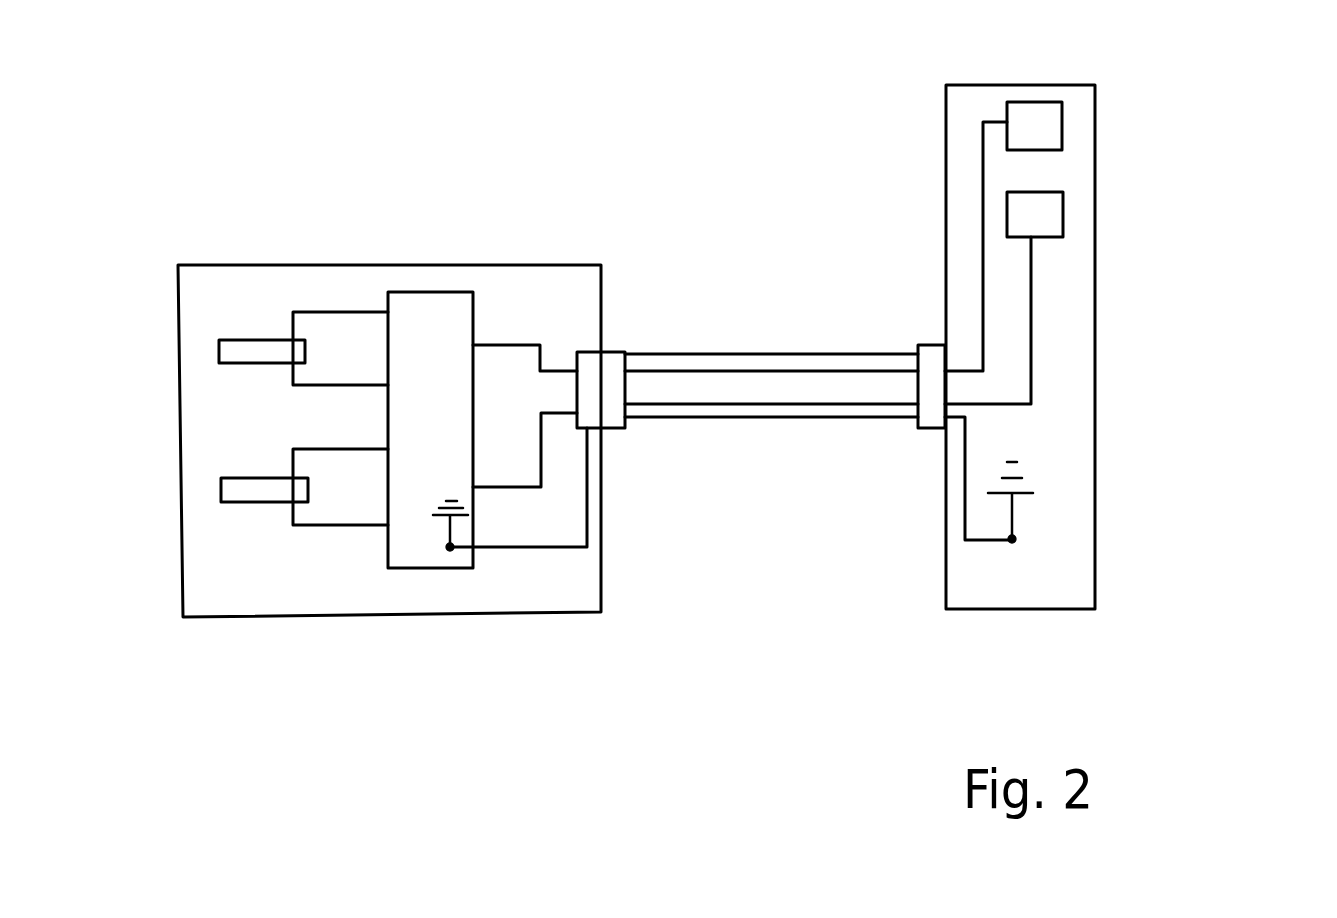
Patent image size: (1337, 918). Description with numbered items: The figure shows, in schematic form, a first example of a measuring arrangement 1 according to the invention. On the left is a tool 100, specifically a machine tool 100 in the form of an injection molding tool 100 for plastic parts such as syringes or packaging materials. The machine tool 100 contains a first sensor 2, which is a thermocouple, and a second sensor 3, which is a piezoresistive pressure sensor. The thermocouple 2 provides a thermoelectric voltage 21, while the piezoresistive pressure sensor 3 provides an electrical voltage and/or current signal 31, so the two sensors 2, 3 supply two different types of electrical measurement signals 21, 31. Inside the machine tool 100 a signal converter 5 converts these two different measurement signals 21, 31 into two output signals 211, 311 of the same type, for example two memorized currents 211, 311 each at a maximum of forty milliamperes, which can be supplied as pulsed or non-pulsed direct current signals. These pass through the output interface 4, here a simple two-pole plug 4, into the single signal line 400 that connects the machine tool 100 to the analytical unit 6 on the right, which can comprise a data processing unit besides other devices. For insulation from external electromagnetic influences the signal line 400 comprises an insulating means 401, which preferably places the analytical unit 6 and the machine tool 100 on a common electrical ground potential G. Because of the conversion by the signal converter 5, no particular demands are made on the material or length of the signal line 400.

The measuring arrangement 1 is at (1138, 165).
The first sensor 2 is at (258, 350).
The second sensor 3 is at (265, 488).
The output interface 4 is at (592, 372).
The signal converter 5 is at (443, 320).
The analytical unit 6 is at (1078, 570).
The thermoelectric voltage 21 is at (348, 312).
The electrical voltage and/or current signal 31 is at (333, 527).
The machine tool 100 is at (410, 617).
The output signal 211 is at (527, 345).
The output signal 311 is at (712, 408).
The signal line 400 is at (820, 420).
The insulating means 401 is at (787, 355).
The electrical ground potential G is at (1005, 540).